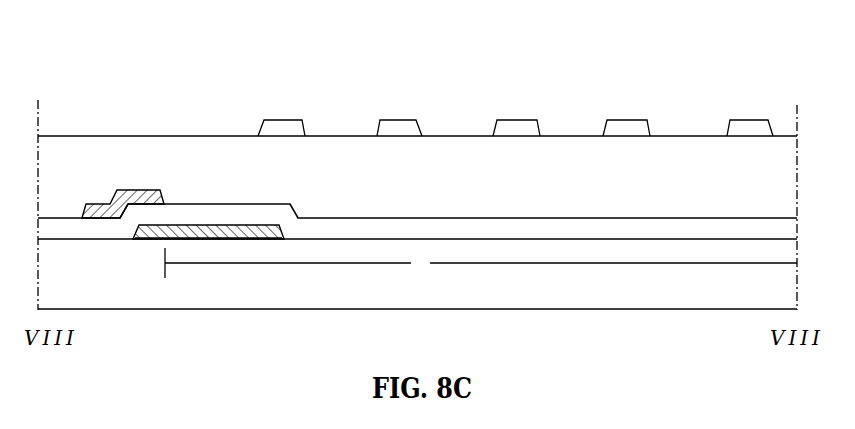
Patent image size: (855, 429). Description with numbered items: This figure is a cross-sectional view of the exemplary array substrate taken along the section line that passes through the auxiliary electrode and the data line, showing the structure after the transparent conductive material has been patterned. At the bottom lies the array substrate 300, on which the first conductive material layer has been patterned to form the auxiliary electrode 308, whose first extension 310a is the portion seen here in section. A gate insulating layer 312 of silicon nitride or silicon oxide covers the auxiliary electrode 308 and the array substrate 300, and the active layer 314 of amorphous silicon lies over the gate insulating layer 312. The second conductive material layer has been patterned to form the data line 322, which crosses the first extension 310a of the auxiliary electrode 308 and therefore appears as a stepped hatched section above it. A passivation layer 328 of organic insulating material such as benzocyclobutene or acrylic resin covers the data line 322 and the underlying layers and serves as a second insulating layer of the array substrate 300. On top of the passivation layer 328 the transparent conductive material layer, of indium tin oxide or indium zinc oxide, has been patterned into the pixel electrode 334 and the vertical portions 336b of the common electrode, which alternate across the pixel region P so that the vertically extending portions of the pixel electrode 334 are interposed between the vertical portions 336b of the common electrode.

The array substrate 300 is at (110, 295).
The auxiliary electrode 308 is at (263, 239).
The first extension 310a is at (148, 239).
The gate insulating layer 312 is at (473, 232).
The active layer 314 is at (607, 281).
The data line 322 is at (100, 190).
The passivation layer 328 is at (138, 135).
The pixel electrode 334 is at (397, 125).
The vertical portions of the common electrode 336b is at (285, 125).
The pixel region P is at (295, 263).